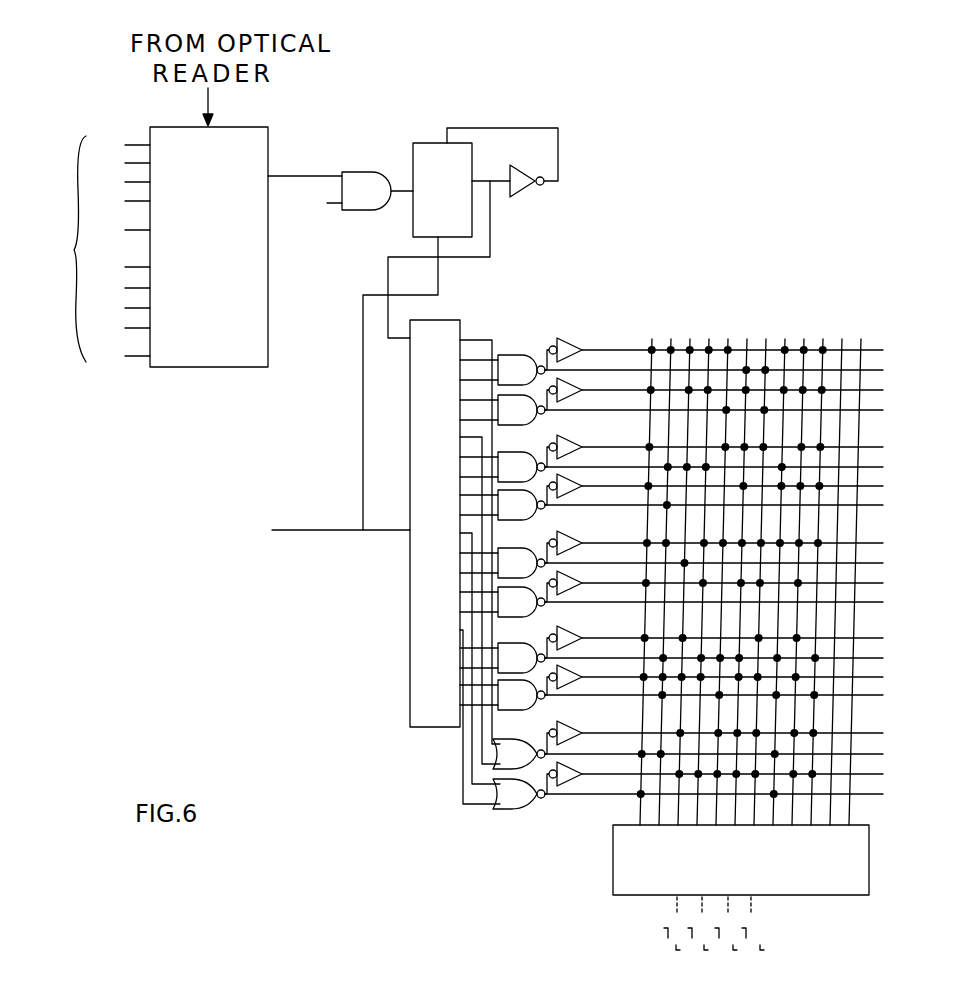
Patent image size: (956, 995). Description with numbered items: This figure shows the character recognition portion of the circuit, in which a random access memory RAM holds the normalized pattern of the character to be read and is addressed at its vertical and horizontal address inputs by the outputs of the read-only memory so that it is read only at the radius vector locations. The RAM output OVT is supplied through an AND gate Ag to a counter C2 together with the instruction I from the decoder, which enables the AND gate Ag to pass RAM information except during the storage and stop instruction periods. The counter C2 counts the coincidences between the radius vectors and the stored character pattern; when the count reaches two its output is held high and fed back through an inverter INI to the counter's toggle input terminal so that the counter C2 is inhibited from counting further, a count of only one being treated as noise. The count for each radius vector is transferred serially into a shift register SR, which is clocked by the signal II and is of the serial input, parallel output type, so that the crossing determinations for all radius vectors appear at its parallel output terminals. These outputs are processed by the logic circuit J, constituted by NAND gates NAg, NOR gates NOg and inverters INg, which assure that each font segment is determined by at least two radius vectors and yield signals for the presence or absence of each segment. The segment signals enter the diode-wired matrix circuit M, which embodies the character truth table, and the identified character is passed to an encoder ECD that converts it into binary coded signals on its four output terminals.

The random access memory RAM is at (198, 367).
The output of RAM OVT is at (276, 180).
The AND gate Ag is at (362, 197).
The instruction I-bar I is at (319, 190).
The counter C2 is at (424, 150).
The inverter INI is at (523, 198).
The clock signal II is at (320, 532).
The shift register SR is at (424, 326).
The character recognition logic circuit J is at (558, 320).
The NAND gate NAg is at (520, 366).
The NOR gate NOg is at (497, 760).
The inverter INg is at (578, 355).
The matrix circuit M is at (770, 330).
The encoder ECD is at (624, 896).